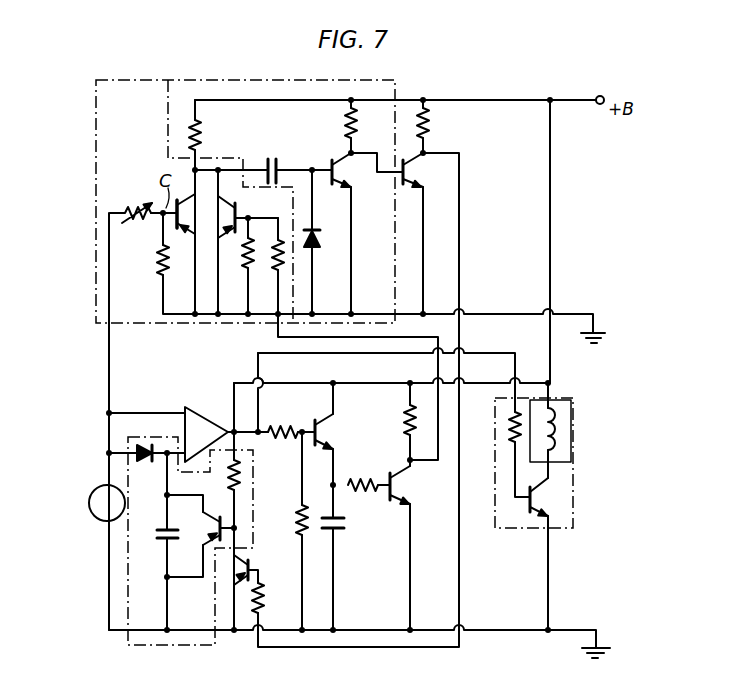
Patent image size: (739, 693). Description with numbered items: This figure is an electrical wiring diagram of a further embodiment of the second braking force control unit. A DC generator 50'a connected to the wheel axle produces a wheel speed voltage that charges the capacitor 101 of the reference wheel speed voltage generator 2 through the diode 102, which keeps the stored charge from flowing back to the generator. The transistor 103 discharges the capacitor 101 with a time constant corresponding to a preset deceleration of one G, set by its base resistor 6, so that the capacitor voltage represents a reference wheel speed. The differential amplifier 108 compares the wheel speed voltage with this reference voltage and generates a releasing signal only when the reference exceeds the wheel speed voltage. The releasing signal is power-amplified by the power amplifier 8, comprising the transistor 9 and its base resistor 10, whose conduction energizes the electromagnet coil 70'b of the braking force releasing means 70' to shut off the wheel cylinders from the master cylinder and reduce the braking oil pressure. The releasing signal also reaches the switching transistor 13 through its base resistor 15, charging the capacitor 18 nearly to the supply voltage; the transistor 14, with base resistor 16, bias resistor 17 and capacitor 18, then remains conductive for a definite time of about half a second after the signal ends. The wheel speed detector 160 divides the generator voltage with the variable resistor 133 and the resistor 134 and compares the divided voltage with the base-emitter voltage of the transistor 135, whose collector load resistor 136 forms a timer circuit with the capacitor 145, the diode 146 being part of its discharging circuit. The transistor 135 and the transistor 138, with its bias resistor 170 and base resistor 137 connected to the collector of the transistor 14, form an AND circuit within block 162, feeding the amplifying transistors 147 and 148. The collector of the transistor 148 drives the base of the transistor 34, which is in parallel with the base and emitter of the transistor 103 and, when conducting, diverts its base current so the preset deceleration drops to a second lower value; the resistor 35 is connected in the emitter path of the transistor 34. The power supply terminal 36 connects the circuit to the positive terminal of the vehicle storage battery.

The reference wheel speed voltage generator 2 is at (134, 648).
The base resistor 6 is at (240, 478).
The power amplifier 8 is at (520, 530).
The transistor 9 is at (547, 494).
The base resistor 10 is at (510, 427).
The transistor 13 is at (330, 430).
The transistor 14 is at (405, 495).
The base resistor 15 is at (280, 428).
The base resistor 16 is at (378, 468).
The bias resistor 17 is at (296, 520).
The capacitor 18 is at (344, 522).
The transistor 34 is at (240, 573).
The resistor 35 is at (262, 603).
The power supply terminal 36 is at (603, 96).
The DC generator 50'a is at (85, 492).
The braking force releasing means 70' is at (572, 425).
The electromagnet coil 70'b is at (586, 433).
The capacitor 101 is at (157, 534).
The diode 102 is at (148, 460).
The transistor 103 is at (212, 530).
The differential amplifier 108 is at (198, 410).
The variable resistor 133 is at (127, 206).
The resistor 134 is at (158, 262).
The transistor 135 is at (183, 258).
The collector load resistor 136 is at (199, 140).
The base resistor 137 is at (286, 256).
The transistor 138 is at (242, 215).
The capacitor 145 is at (274, 158).
The diode 146 is at (314, 240).
The amplifying transistor 147 is at (352, 184).
The amplifying transistor 148 is at (416, 176).
The wheel speed detector 160 is at (92, 143).
The output circuit 162 is at (275, 80).
The bias resistor 170 is at (248, 258).